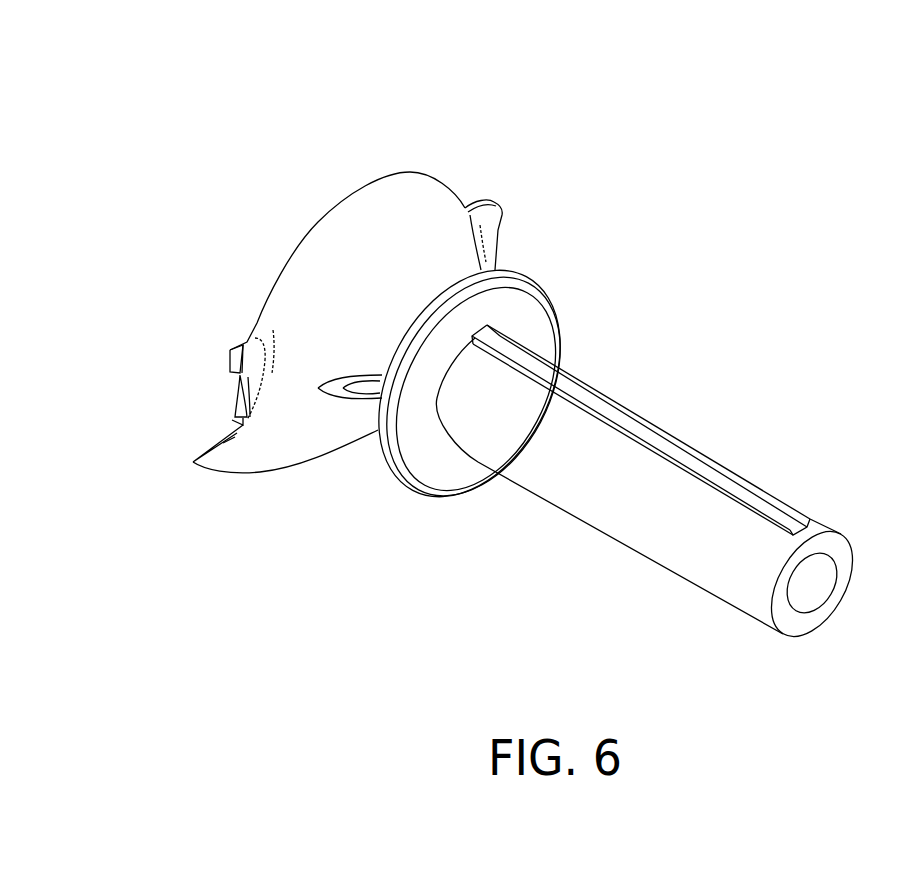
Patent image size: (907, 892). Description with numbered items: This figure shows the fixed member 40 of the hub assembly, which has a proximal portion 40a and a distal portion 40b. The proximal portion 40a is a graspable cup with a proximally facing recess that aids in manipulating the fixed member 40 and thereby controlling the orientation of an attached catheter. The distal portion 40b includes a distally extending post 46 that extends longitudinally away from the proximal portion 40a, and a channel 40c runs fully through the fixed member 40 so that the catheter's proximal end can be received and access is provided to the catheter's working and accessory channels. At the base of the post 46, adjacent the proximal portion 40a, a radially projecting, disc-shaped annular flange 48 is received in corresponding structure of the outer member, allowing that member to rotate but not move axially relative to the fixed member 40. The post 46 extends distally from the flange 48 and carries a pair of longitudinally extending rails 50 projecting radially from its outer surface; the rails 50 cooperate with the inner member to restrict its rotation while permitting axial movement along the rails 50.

The fixed member 40 is at (718, 266).
The proximal portion 40a is at (467, 166).
The distal portion 40b is at (805, 480).
The channel 40c is at (812, 583).
The post 46 is at (697, 565).
The flange 48 is at (521, 276).
The rails 50 is at (720, 477).